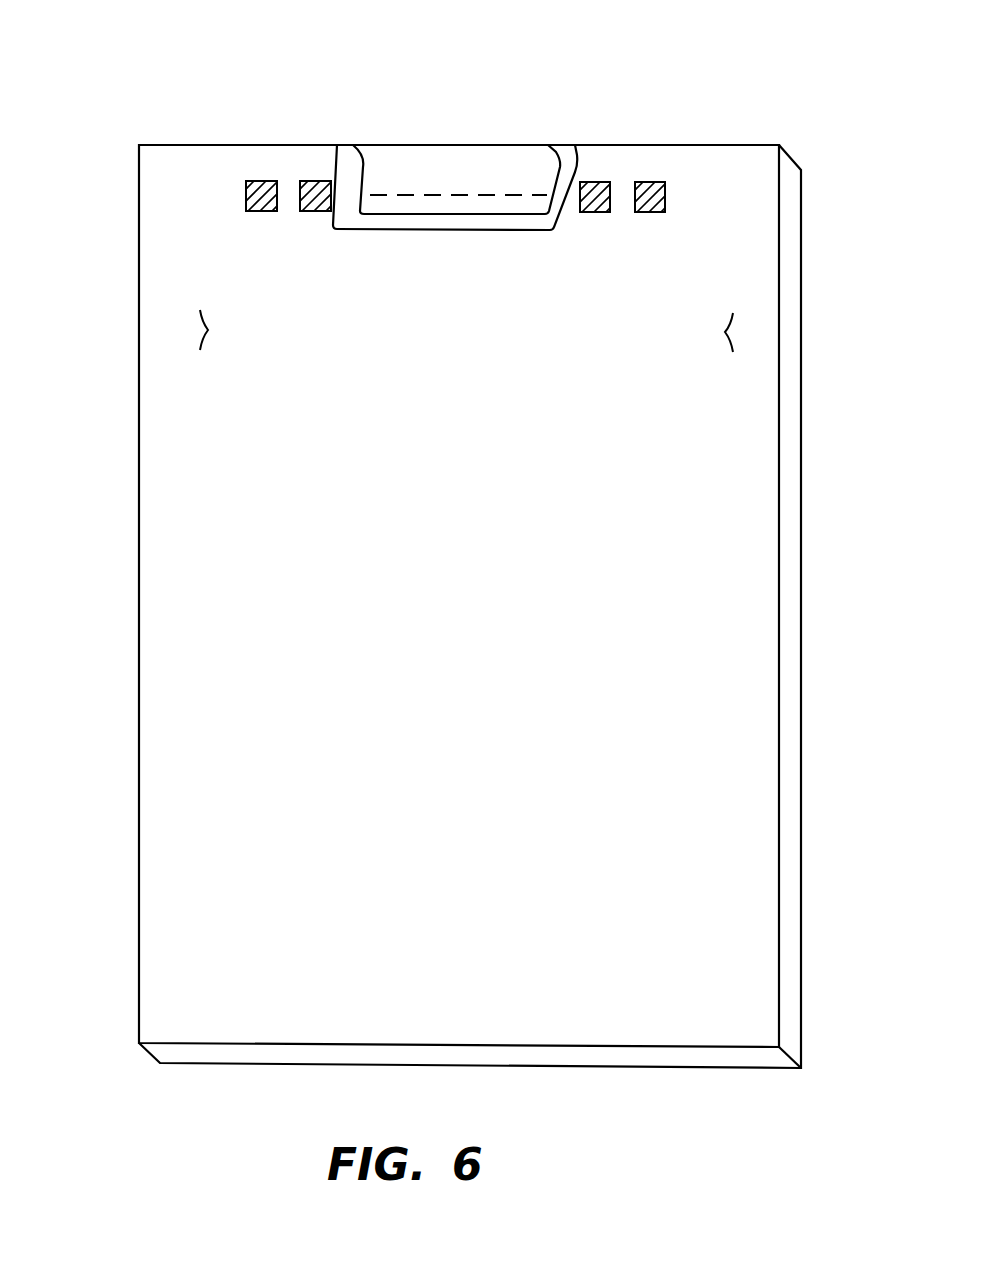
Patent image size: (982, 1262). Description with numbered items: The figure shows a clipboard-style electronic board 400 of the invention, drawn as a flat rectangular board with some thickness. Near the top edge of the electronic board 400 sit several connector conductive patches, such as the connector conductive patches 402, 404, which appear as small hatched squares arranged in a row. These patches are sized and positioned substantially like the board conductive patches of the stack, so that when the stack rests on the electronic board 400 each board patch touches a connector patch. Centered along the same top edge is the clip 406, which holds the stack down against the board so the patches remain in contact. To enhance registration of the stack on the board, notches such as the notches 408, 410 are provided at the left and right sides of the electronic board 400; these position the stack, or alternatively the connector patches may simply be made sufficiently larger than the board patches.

The electronic board 400 is at (722, 755).
The connector conductive patch 402 is at (260, 180).
The connector conductive patch 404 is at (313, 180).
The clip 406 is at (577, 147).
The notch 408 is at (198, 330).
The notch 410 is at (737, 332).